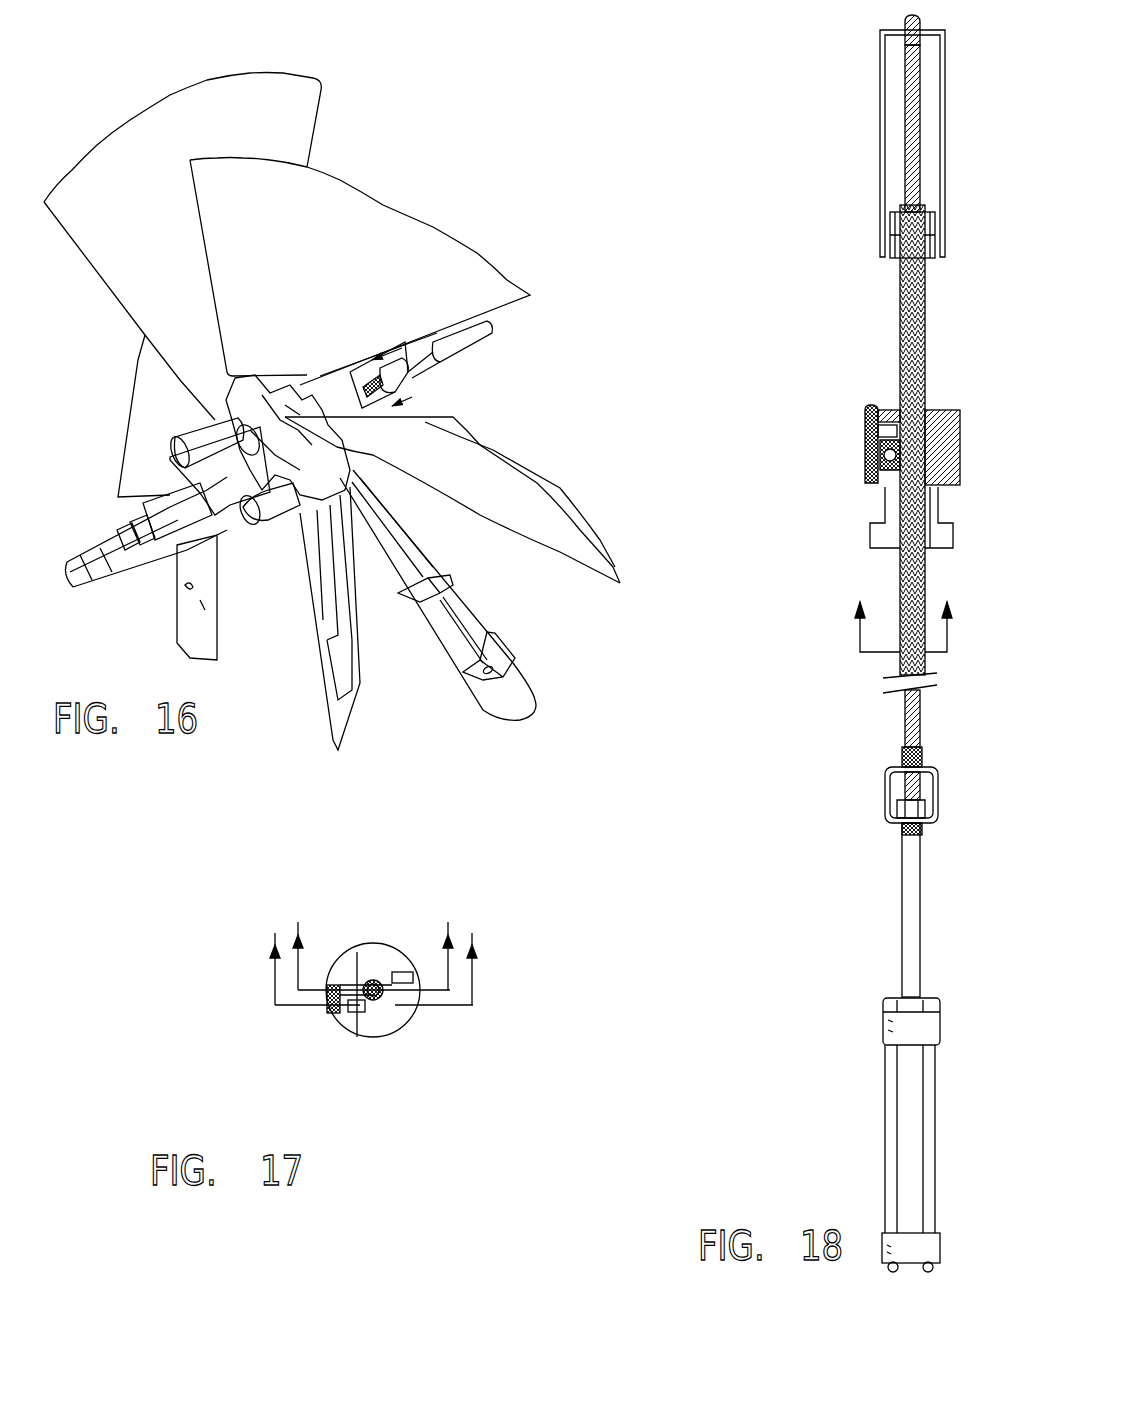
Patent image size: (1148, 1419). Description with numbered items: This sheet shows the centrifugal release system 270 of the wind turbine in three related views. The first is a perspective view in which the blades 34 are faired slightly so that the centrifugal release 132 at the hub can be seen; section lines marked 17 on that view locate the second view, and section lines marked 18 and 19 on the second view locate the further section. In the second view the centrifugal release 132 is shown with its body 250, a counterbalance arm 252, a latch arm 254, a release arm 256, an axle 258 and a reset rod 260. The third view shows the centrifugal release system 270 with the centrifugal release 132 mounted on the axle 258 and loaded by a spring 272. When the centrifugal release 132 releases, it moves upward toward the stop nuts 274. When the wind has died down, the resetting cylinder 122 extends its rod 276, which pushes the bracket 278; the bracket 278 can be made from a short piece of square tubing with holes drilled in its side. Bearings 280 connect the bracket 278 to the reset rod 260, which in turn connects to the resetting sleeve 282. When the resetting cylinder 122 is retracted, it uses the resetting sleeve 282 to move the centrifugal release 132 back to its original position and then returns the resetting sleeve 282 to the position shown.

In FIG. 16, the blades 34 is at (332, 210).
In FIG. 16, the centrifugal release 132 is at (413, 378).
In FIG. 17, the centrifugal release 132 is at (377, 950).
In FIG. 18, the centrifugal release 132 is at (863, 455).
In FIG. 16, the section line 17 is at (410, 371).
In FIG. 18, the section line 17 is at (904, 609).
In FIG. 17, the section line 18 is at (375, 932).
In FIG. 17, the section line 19 is at (376, 949).
In FIG. 17, the counterbalance arm 252 is at (403, 980).
In FIG. 17, the body 250 is at (398, 1020).
In FIG. 17, the reset rod 260 is at (377, 997).
In FIG. 18, the reset rod 260 is at (898, 350).
In FIG. 17, the axle 258 is at (372, 1000).
In FIG. 18, the axle 258 is at (898, 287).
In FIG. 17, the latch arm 254 is at (347, 1007).
In FIG. 17, the release arm 256 is at (337, 1010).
In FIG. 18, the centrifugal release system 270 is at (822, 93).
In FIG. 18, the resetting sleeve 282 is at (880, 150).
In FIG. 18, the stop nuts 274 is at (898, 226).
In FIG. 18, the spring 272 is at (895, 665).
In FIG. 18, the bearings 280 is at (892, 777).
In FIG. 18, the bracket 278 is at (887, 808).
In FIG. 18, the rod 276 is at (912, 907).
In FIG. 18, the resetting cylinder 122 is at (910, 1105).